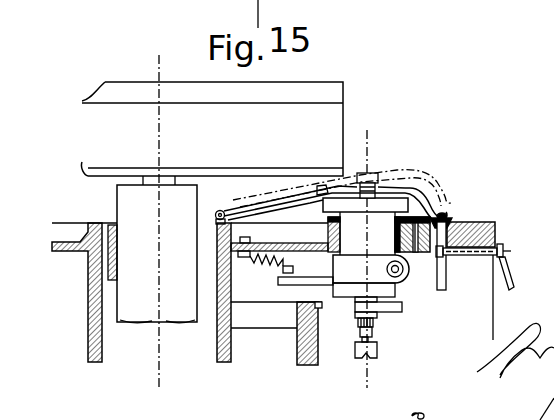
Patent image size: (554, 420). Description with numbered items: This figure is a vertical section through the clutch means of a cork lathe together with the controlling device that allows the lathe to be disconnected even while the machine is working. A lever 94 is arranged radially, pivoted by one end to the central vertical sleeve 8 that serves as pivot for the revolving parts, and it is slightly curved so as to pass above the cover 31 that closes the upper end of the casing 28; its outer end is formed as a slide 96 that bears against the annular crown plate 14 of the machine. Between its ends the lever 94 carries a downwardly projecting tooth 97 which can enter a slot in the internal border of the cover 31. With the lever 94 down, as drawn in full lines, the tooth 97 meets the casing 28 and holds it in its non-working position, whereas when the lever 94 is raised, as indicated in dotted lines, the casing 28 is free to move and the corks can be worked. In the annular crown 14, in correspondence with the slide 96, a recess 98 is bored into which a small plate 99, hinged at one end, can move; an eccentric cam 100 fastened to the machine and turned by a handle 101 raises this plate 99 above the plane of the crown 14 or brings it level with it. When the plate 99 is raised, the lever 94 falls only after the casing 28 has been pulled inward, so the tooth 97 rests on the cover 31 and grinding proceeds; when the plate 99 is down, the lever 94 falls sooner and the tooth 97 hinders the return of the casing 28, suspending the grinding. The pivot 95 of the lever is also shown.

The vertical sleeve 8 is at (222, 357).
The annular crown 14 is at (492, 245).
The casing 28 is at (405, 204).
The cover 31 is at (434, 186).
The lever 94 is at (398, 176).
The pivot 95 is at (220, 211).
The slide 96 is at (450, 218).
The tooth 97 is at (325, 200).
The recess 98 is at (448, 255).
The plate 99 is at (466, 223).
The eccentric cam 100 is at (442, 290).
The handle 101 is at (509, 292).